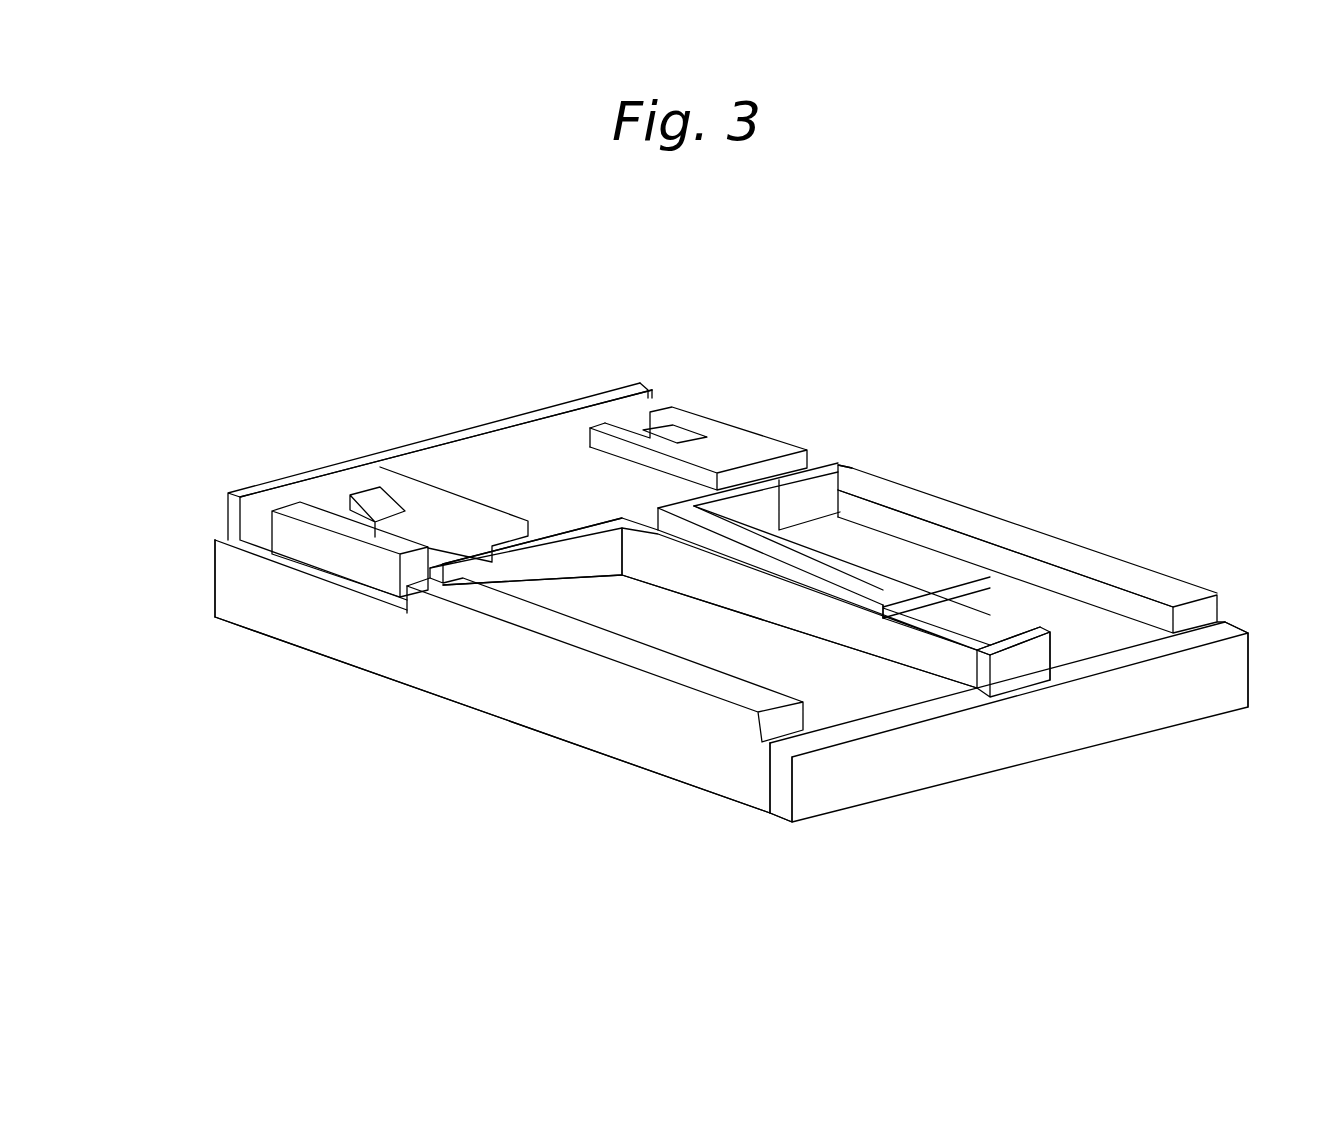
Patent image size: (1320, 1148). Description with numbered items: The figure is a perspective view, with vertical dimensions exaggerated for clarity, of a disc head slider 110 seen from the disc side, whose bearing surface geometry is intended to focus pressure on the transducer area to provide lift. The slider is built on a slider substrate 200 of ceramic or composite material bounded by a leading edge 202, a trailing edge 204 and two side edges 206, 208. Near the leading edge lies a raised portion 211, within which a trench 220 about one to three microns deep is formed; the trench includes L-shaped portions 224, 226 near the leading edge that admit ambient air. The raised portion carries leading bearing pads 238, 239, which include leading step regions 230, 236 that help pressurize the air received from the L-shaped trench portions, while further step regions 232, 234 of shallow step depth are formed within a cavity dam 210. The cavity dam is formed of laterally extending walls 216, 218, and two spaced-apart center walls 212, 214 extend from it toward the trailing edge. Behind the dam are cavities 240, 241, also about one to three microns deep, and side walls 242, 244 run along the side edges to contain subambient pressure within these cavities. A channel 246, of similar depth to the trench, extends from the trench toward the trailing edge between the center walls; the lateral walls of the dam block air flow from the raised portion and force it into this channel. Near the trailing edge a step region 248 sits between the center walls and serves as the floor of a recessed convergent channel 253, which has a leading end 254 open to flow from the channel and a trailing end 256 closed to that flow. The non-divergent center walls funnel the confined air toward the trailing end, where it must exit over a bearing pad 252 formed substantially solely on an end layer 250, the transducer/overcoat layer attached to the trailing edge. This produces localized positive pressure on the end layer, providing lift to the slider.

The slider 110 is at (345, 292).
The slider substrate 200 is at (1105, 638).
The leading edge 202 is at (215, 568).
The trailing edge 204 is at (765, 790).
The side edge 206 is at (542, 736).
The side edge 208 is at (997, 520).
The cavity dam 210 is at (565, 534).
The raised portion 211 is at (500, 450).
The center wall 212 is at (778, 508).
The center wall 214 is at (657, 545).
The laterally extending wall 216 is at (818, 465).
The laterally extending wall 218 is at (505, 553).
The trench 220 is at (395, 577).
The L-shaped portion 224 is at (569, 416).
The L-shaped portion 226 is at (258, 497).
The step region 230 is at (662, 435).
The step region 232 is at (633, 430).
The step region 234 is at (470, 523).
The step region 236 is at (346, 512).
The leading bearing pad 238 is at (728, 445).
The leading bearing pad 239 is at (393, 530).
The cavity 240 is at (897, 562).
The cavity 241 is at (722, 645).
The side wall 242 is at (1117, 573).
The side wall 244 is at (675, 672).
The channel 246 is at (803, 557).
The step region 248 is at (1003, 634).
The end layer 250 is at (1237, 624).
The bearing pad 252 is at (1012, 628).
The recessed convergent channel 253 is at (920, 637).
The leading end 254 is at (889, 600).
The trailing end 256 is at (1028, 633).